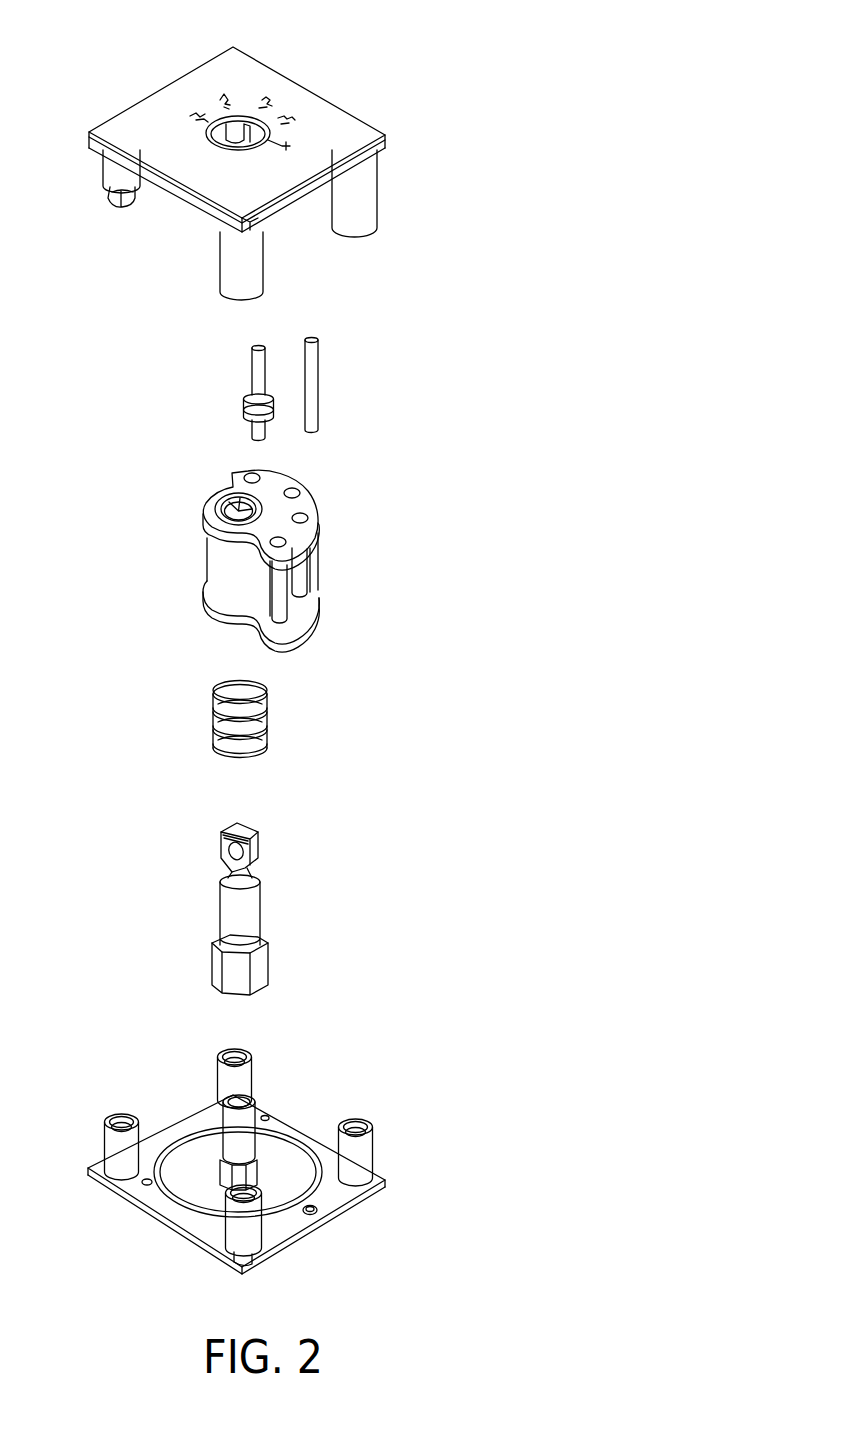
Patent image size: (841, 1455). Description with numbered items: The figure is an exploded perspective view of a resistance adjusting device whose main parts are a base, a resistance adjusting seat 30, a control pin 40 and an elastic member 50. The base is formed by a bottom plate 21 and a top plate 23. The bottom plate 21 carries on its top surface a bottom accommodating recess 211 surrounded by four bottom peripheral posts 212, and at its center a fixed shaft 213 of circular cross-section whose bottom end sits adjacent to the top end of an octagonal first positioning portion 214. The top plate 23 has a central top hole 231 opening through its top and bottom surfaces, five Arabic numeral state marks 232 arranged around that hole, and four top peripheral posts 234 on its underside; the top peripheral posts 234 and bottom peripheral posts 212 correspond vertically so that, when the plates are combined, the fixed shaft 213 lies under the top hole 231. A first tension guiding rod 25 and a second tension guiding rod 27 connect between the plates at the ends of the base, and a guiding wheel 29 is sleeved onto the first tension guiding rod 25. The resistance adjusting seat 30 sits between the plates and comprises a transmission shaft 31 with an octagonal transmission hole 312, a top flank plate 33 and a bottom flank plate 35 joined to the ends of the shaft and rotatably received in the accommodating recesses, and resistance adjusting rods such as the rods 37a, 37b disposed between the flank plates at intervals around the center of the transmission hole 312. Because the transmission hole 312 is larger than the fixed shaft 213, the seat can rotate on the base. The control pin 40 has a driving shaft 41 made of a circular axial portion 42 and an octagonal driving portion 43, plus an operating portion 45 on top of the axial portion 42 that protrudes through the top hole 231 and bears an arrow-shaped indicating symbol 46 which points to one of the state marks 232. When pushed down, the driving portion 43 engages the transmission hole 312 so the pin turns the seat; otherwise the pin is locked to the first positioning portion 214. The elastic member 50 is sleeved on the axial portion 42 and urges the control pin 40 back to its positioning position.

The bottom plate 21 is at (280, 1159).
The bottom accommodating recess 211 is at (300, 1193).
The bottom peripheral posts 212 is at (365, 1167).
The fixed shaft 213 is at (242, 1135).
The first positioning portion 214 is at (242, 1175).
The top plate 23 is at (292, 150).
The top hole 231 is at (247, 128).
The state marks 232 is at (293, 118).
The top peripheral posts 234 is at (363, 200).
The first tension guiding rod 25 is at (257, 362).
The second tension guiding rod 27 is at (313, 358).
The guiding wheel 29 is at (247, 398).
The resistance adjusting seat 30 is at (246, 563).
The transmission shaft 31 is at (218, 568).
The transmission hole 312 is at (222, 498).
The top flank plate 33 is at (265, 530).
The bottom flank plate 35 is at (265, 612).
The resistance adjusting rod 37a is at (284, 611).
The resistance adjusting rod 37b is at (304, 572).
The control pin 40 is at (245, 892).
The driving shaft 41 is at (326, 935).
The axial portion 42 is at (240, 920).
The driving portion 43 is at (255, 975).
The operating portion 45 is at (251, 826).
The indicating symbol 46 is at (227, 828).
The elastic member 50 is at (263, 725).